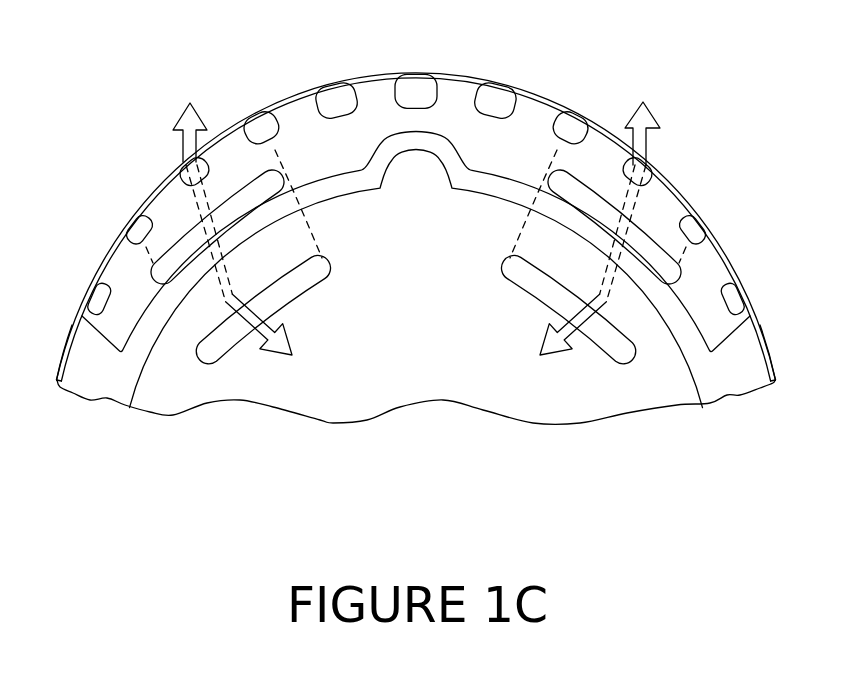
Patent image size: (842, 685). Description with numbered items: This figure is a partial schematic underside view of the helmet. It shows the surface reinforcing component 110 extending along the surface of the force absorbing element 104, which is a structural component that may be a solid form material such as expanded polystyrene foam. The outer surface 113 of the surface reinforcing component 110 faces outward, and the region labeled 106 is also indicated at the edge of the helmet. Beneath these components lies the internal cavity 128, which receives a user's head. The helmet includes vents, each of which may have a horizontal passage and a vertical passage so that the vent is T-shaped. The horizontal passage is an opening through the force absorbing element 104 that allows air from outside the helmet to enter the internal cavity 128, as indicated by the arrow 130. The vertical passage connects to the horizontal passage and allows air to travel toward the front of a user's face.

The force absorbing element 104 is at (770, 356).
The shell side edge 106 is at (78, 338).
The surface reinforcing component 110 is at (543, 92).
The outer surface 113 is at (718, 263).
The internal cavity 128 is at (350, 390).
The arrow 130 is at (657, 117).